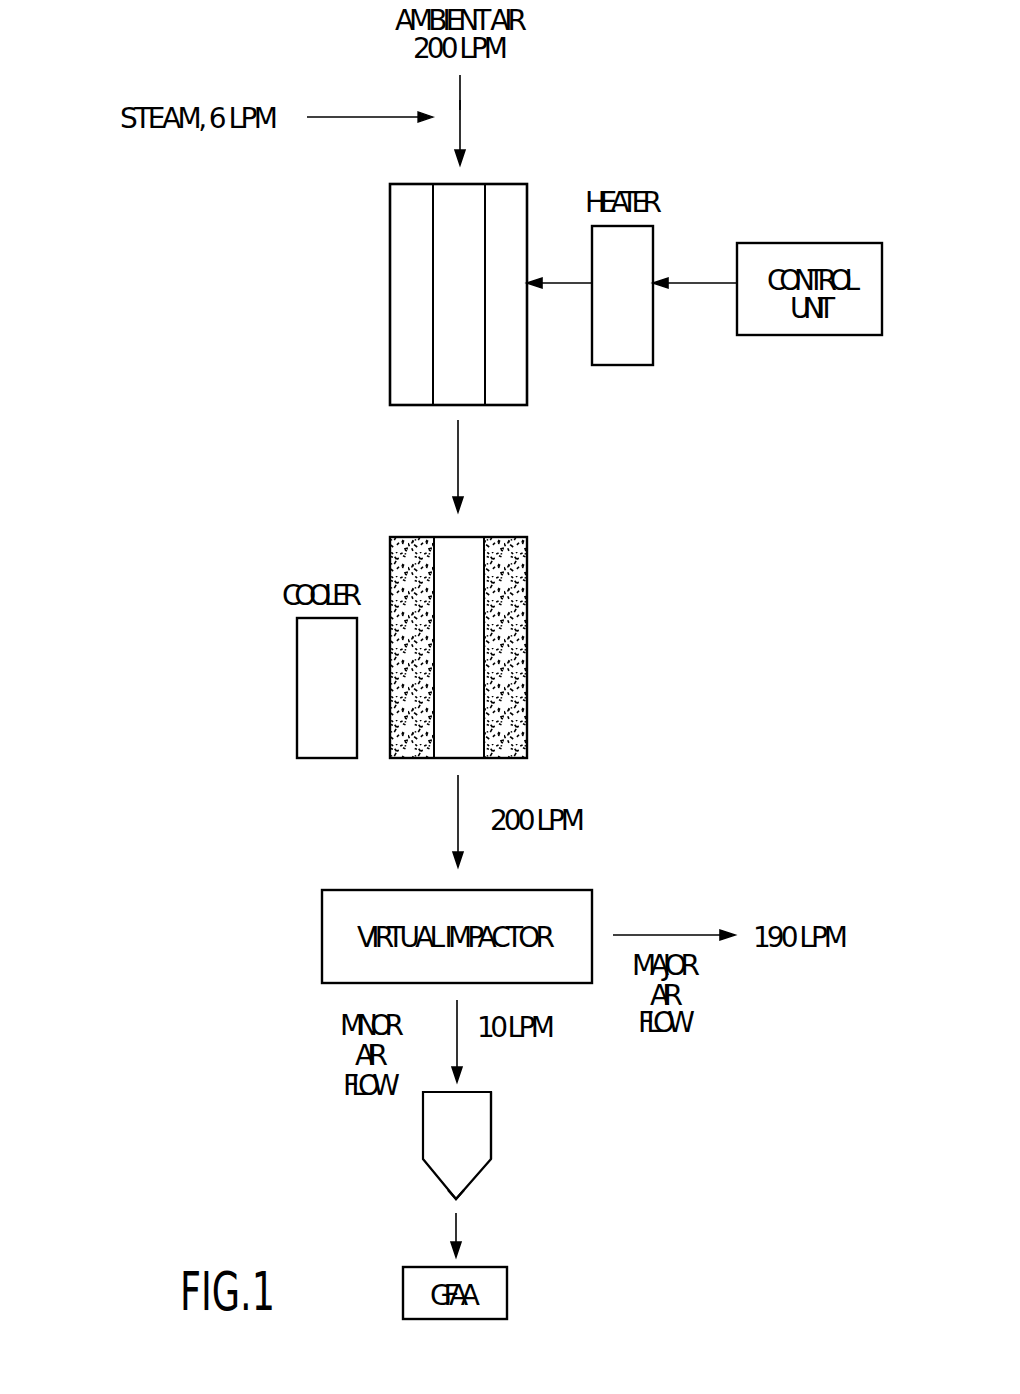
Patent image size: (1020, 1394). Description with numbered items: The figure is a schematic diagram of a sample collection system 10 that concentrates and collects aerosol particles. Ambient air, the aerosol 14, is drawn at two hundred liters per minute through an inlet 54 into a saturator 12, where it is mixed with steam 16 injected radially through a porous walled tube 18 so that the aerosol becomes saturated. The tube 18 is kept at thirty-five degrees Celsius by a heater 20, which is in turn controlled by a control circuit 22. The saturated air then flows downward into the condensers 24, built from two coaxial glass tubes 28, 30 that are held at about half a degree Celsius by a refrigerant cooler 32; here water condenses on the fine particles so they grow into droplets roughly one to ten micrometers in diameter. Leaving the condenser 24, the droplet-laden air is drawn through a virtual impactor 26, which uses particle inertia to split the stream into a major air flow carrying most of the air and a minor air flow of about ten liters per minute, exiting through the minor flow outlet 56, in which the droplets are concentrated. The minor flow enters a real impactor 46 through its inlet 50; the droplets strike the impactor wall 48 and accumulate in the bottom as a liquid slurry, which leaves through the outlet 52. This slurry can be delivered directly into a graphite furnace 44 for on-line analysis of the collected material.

The sample collection system 10 is at (578, 116).
The saturator 12 is at (360, 283).
The aerosol 14 is at (460, 107).
The steam 16 is at (342, 117).
The porous walled tube 18 is at (433, 380).
The heater 20 is at (645, 365).
The control circuit 22 is at (813, 335).
The condensers 24 is at (565, 590).
The virtual impactor 26 is at (592, 900).
The coaxial glass tube 28 is at (408, 758).
The coaxial glass tube 30 is at (514, 717).
The refrigerant cooler 32 is at (297, 718).
The graphite furnace 44 is at (507, 1290).
The real impactor 46 is at (383, 1150).
The collector wall 48 is at (482, 1135).
The collector inlet 50 is at (455, 1088).
The collector outlet 52 is at (455, 1205).
The mixing chamber inlet 54 is at (460, 175).
The minor flow outlet 56 is at (457, 992).